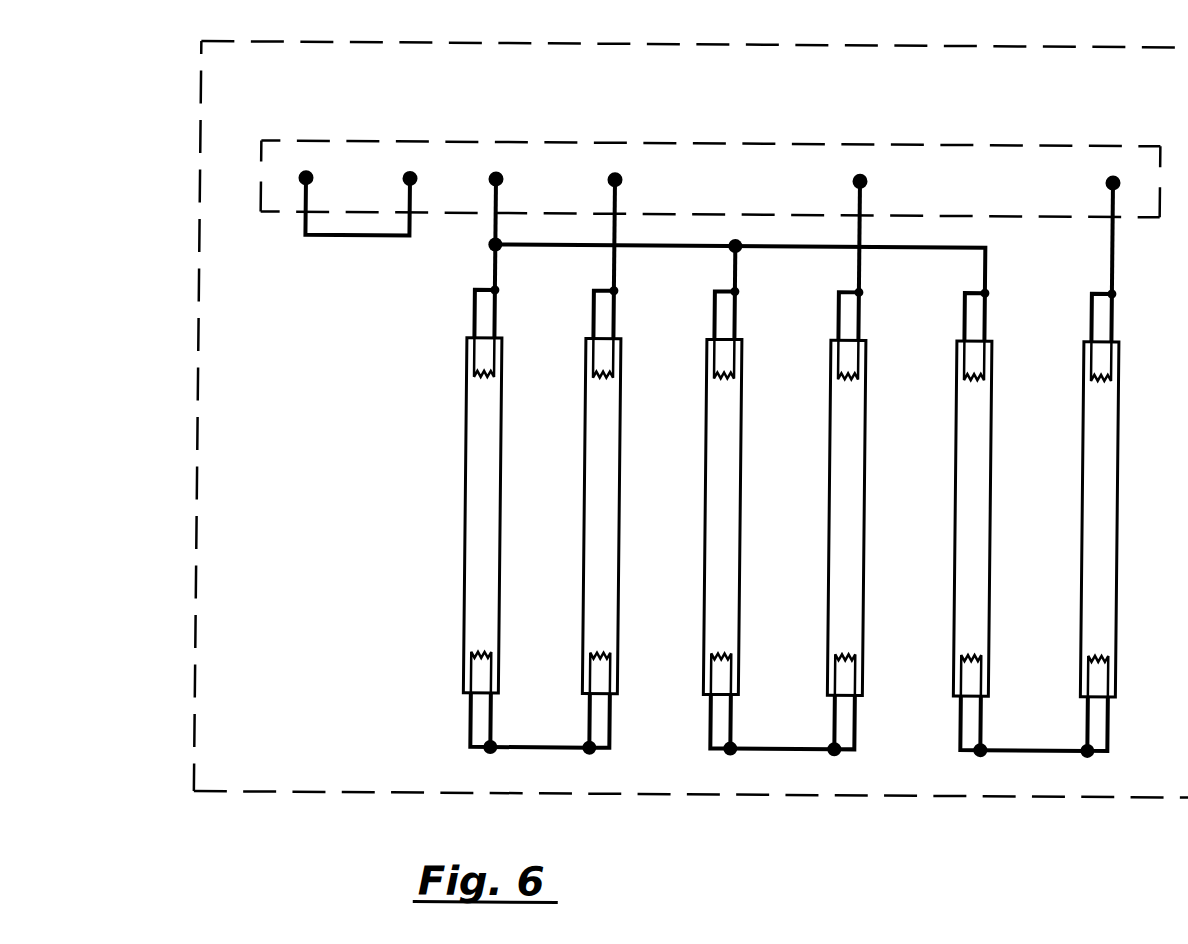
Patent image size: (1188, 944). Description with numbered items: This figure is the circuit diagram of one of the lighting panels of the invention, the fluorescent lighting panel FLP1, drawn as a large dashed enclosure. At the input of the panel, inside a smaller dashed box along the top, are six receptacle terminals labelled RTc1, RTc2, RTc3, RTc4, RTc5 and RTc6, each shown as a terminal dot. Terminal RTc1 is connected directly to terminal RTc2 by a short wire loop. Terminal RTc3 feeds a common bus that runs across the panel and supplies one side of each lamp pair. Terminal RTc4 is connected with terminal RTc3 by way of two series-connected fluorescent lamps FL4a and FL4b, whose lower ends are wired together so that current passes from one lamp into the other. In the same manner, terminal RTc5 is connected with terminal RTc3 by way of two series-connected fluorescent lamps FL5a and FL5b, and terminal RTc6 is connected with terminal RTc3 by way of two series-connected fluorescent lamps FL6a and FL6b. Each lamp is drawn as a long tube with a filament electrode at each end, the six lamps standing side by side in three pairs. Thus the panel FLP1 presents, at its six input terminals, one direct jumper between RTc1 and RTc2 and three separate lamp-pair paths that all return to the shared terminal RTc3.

The receptacle terminal RTc1 is at (306, 171).
The receptacle terminal RTc2 is at (410, 171).
The receptacle terminal RTc3 is at (496, 171).
The receptacle terminal RTc4 is at (615, 171).
The receptacle terminal RTc5 is at (860, 171).
The receptacle terminal RTc6 is at (1113, 171).
The fluorescent lamp FL4a is at (466, 460).
The fluorescent lamp FL4b is at (586, 460).
The fluorescent lamp FL5a is at (707, 503).
The fluorescent lamp FL5b is at (831, 503).
The fluorescent lamp FL6a is at (957, 545).
The fluorescent lamp FL6b is at (1084, 545).
The fluorescent lighting panel FLP1 is at (437, 798).